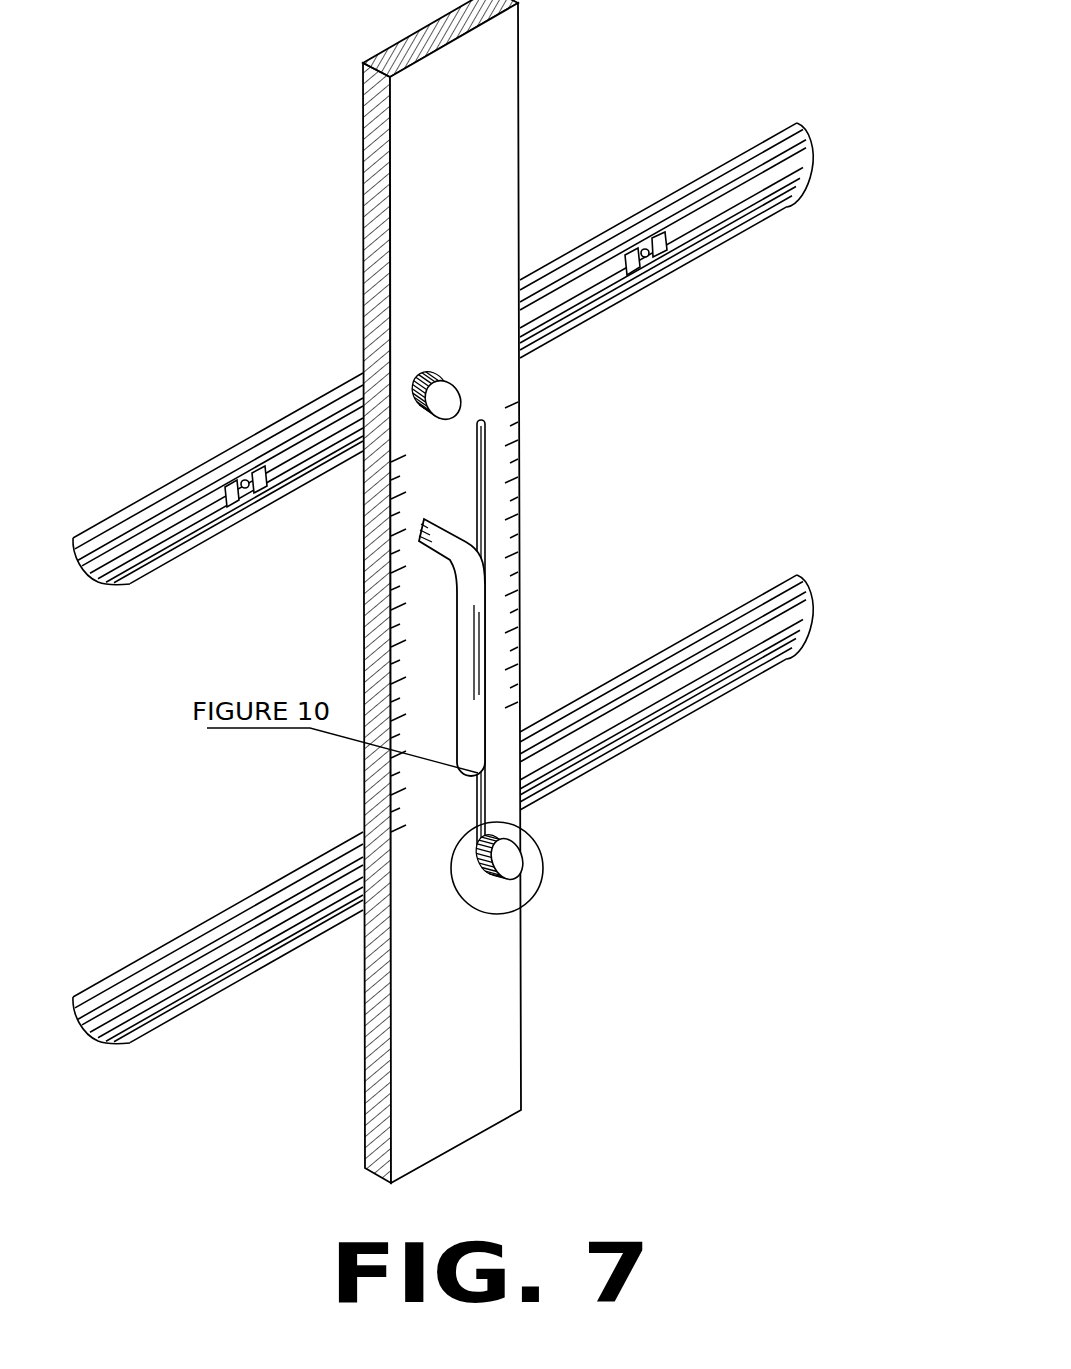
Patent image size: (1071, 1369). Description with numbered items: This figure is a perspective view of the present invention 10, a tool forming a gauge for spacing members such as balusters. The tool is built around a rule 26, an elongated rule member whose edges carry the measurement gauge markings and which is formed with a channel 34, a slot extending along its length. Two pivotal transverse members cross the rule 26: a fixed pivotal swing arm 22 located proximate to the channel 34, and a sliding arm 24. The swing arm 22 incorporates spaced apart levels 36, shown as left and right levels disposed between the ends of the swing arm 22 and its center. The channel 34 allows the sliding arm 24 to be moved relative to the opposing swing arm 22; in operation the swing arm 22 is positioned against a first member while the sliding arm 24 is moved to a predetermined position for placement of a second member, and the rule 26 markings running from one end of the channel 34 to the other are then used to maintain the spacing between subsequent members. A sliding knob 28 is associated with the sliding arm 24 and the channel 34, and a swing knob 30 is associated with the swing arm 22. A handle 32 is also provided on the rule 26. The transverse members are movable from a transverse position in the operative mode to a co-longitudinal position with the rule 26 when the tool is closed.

The present invention 10 is at (843, 312).
The swing arm 22 is at (762, 212).
The sliding arm 24 is at (707, 703).
The rule 26 is at (522, 568).
The sliding knob 28 is at (507, 852).
The swing knob 30 is at (440, 376).
The handle 32 is at (462, 656).
The channel 34 is at (480, 470).
The level 36 is at (645, 248).